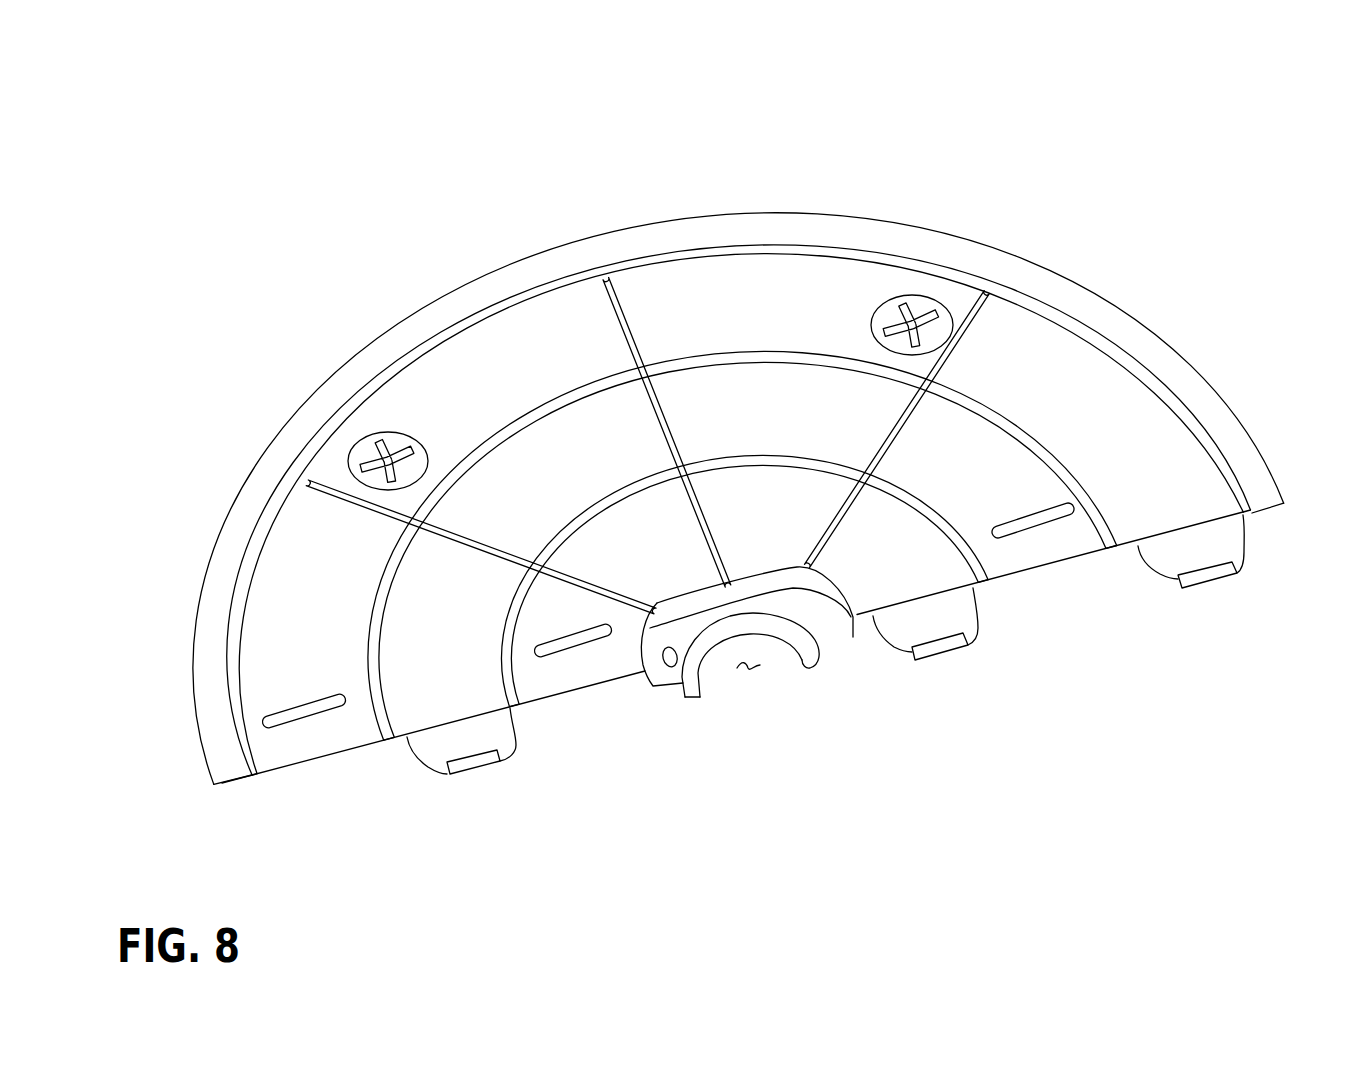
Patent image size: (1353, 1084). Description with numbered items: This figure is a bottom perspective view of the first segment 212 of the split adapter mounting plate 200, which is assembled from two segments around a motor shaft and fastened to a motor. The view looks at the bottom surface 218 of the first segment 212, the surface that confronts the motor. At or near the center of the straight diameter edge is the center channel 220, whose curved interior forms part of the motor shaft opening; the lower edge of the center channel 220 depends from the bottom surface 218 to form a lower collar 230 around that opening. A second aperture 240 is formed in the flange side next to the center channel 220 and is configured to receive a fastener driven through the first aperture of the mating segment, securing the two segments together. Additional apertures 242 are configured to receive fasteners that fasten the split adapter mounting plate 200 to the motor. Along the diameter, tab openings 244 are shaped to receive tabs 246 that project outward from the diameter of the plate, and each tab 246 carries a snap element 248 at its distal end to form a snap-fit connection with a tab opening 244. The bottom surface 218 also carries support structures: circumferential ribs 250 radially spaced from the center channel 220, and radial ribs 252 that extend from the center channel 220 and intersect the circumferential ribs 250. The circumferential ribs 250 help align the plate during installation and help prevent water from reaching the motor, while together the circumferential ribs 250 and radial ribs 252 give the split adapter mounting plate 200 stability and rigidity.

The split adapter mounting plate 200 is at (327, 72).
The first segment 212 is at (316, 352).
The bottom surface 218 is at (310, 555).
The center channel 220 is at (747, 680).
The lower collar 230 is at (805, 638).
The second aperture 240 is at (670, 667).
The additional apertures 242 is at (920, 320).
The tab openings 244 is at (1037, 517).
The tabs 246 is at (967, 615).
The snap element 248 is at (1193, 588).
The circumferential ribs 250 is at (525, 295).
The radial ribs 252 is at (627, 314).